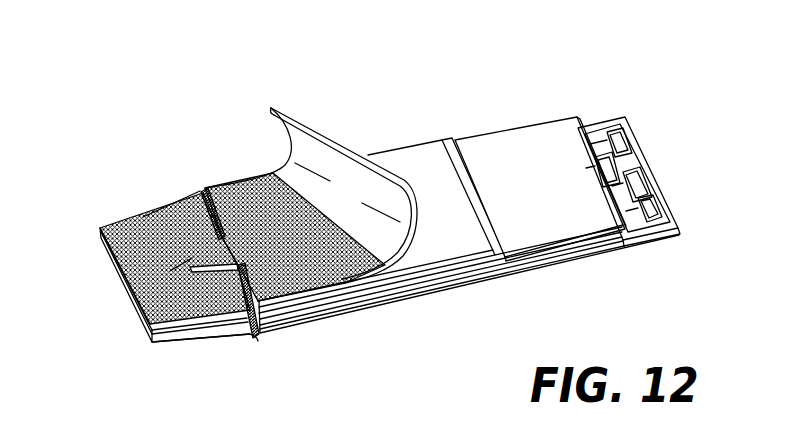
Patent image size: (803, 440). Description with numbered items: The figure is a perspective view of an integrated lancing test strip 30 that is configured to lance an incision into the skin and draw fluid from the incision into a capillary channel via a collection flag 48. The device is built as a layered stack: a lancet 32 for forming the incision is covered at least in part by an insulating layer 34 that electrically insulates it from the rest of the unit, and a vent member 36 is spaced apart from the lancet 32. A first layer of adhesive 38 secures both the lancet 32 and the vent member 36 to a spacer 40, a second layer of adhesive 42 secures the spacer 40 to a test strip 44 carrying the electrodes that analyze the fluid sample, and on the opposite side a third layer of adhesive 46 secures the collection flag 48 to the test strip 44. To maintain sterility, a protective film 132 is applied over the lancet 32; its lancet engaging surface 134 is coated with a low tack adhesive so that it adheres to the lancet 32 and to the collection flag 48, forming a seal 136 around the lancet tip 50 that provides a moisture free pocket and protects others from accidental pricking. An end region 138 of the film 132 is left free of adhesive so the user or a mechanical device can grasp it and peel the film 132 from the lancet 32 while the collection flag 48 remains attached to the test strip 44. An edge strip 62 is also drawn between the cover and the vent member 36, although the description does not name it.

The integrated lancing test strip 30 is at (315, 36).
The lancet 32 is at (322, 253).
The insulating layer 34 is at (440, 309).
The vent member 36 is at (540, 166).
The first layer of adhesive 38 is at (440, 308).
The spacer 40 is at (588, 295).
The second layer of adhesive 42 is at (445, 287).
The test strip 44 is at (491, 225).
The third layer of adhesive 46 is at (441, 286).
The collection flag 48 is at (441, 309).
The lancet tip 50 is at (158, 205).
The edge strip 62 is at (473, 169).
The protective film 132 is at (230, 228).
The lancet engaging surface 134 is at (295, 237).
The seal 136 is at (156, 267).
The end region 138 is at (311, 166).